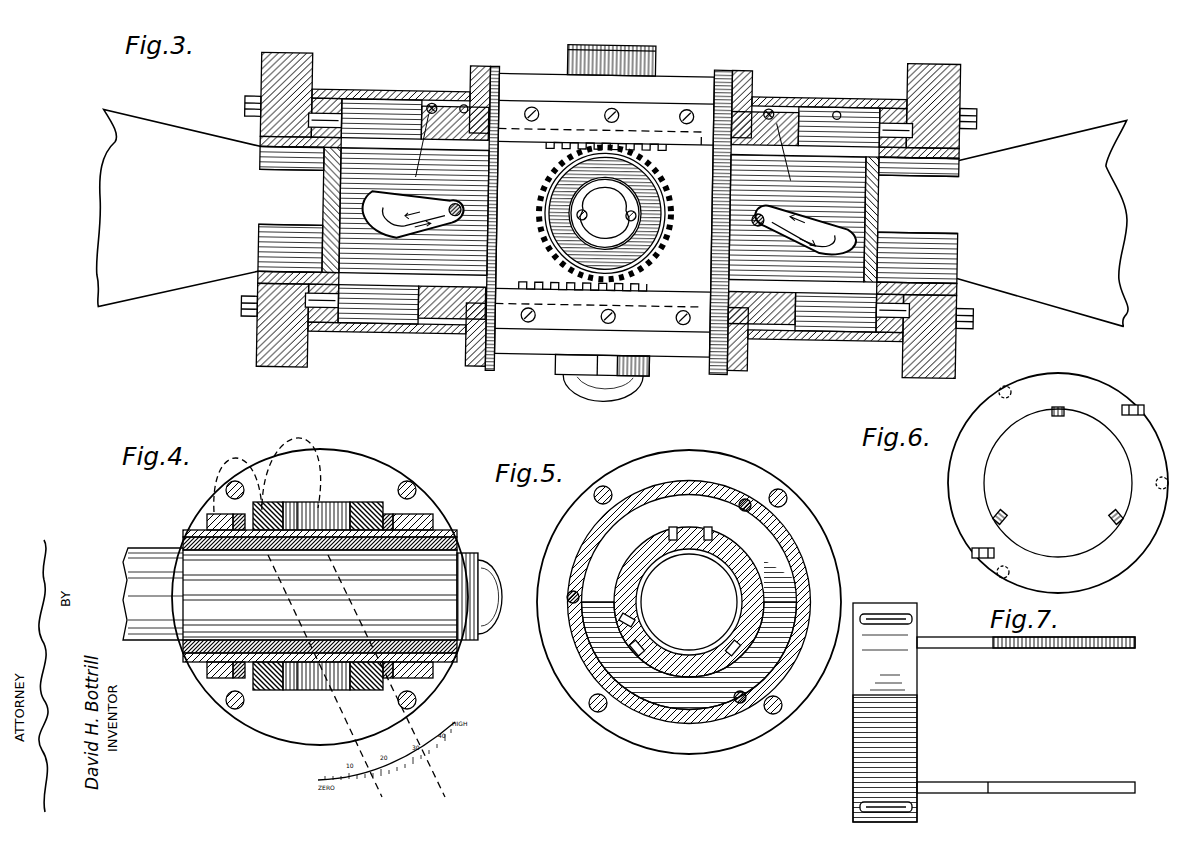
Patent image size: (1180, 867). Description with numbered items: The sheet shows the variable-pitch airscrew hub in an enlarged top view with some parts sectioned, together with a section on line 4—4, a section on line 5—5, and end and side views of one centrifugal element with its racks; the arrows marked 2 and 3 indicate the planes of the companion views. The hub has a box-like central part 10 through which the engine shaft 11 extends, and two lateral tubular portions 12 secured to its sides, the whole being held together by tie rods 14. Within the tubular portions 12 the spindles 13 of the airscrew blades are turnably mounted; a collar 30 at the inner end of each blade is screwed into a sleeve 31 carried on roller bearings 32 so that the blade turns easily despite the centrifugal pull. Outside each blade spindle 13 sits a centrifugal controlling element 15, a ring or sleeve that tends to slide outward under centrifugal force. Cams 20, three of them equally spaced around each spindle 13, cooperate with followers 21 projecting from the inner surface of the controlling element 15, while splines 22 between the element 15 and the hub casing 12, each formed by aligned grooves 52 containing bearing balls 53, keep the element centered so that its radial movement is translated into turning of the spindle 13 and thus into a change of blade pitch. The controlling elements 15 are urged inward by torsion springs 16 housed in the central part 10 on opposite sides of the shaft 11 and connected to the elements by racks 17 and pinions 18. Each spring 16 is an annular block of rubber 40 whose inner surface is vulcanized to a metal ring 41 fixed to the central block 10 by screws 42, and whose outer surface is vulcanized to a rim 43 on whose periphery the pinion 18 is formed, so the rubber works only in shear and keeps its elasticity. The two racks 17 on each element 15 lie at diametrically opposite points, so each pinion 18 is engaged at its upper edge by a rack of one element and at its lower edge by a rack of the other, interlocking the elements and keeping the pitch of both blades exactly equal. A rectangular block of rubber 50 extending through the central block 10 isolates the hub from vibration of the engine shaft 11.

In FIG. 3, the section line 2- 2 is at (265, 210).
In FIG. 4, the section line 2- 2 is at (322, 452).
In FIG. 4, the section line 3- 3 is at (333, 425).
In FIG. 3, the section line 4— 4 is at (605, 45).
In FIG. 5, the section line 4— 4 is at (614, 432).
In FIG. 3, the section line 5— 5 is at (385, 95).
In FIG. 3, the box-like central part 10 is at (608, 220).
In FIG. 4, the box-like central part 10 is at (278, 730).
In FIG. 5, the box-like central part 10 is at (689, 602).
In FIG. 3, the engine shaft 11 is at (653, 52).
In FIG. 4, the engine shaft 11 is at (138, 560).
In FIG. 3, the lateral tubular portions 12 is at (375, 92).
In FIG. 5, the lateral tubular portions 12 is at (712, 462).
In FIG. 3, the blade spindles 13 is at (600, 214).
In FIG. 5, the blade spindles 13 is at (769, 564).
In FIG. 3, the tie rods 14 is at (243, 306).
In FIG. 4, the tie rods 14 is at (240, 480).
In FIG. 5, the tie rods 14 is at (607, 490).
In FIG. 3, the centrifugal controlling elements 15 is at (455, 118).
In FIG. 6, the centrifugal controlling elements 15 is at (1062, 388).
In FIG. 7, the centrifugal controlling elements 15 is at (914, 636).
In FIG. 3, the torsion springs 16 is at (640, 238).
In FIG. 4, the torsion springs 16 is at (345, 510).
In FIG. 3, the racks 17 is at (565, 142).
In FIG. 4, the racks 17 is at (218, 512).
In FIG. 6, the racks 17 is at (1139, 403).
In FIG. 7, the racks 17 is at (1022, 650).
In FIG. 3, the pinions 18 is at (638, 220).
In FIG. 4, the pinions 18 is at (392, 512).
In FIG. 3, the cams 20 is at (388, 214).
In FIG. 5, the cams 20 is at (700, 530).
In FIG. 3, the followers 21 is at (458, 203).
In FIG. 6, the followers 21 is at (1057, 417).
In FIG. 3, the splines 22 is at (462, 100).
In FIG. 5, the splines 22 is at (748, 500).
In FIG. 7, the splines 22 is at (892, 596).
In FIG. 3, the collar 30 is at (270, 178).
In FIG. 5, the sleeve 31 is at (735, 556).
In FIG. 3, the roller bearings 32 is at (915, 118).
In FIG. 3, the annular block of rubber 40 is at (655, 215).
In FIG. 3, the metal ring 41 is at (597, 206).
In FIG. 3, the screws 42 is at (616, 224).
In FIG. 3, the rim 43 is at (662, 186).
In FIG. 4, the rim 43 is at (385, 498).
In FIG. 4, the rectangular block of rubber 50 is at (468, 545).
In FIG. 3, the grooves 52 is at (429, 101).
In FIG. 3, the bearing balls 53 is at (604, 158).